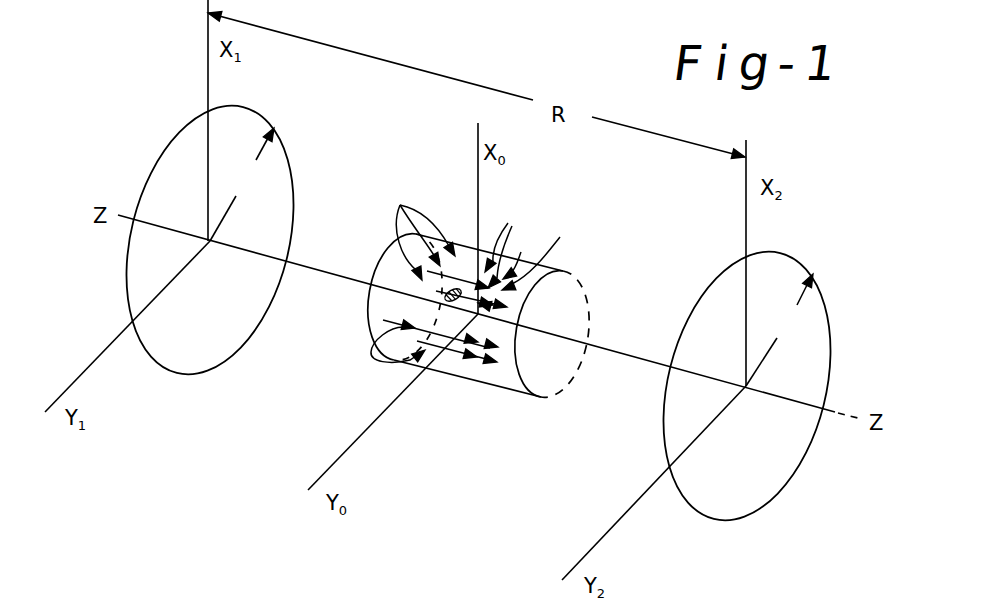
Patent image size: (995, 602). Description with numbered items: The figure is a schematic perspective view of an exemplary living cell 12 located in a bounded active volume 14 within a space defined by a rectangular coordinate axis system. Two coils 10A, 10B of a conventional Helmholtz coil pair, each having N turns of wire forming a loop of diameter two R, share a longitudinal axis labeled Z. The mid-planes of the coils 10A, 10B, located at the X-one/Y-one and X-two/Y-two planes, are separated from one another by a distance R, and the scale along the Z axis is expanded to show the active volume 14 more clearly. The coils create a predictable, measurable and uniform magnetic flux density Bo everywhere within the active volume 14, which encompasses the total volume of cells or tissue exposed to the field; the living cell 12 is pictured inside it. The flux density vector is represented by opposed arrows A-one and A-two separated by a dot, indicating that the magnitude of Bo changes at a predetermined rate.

The coil 10A is at (288, 165).
The coil 10B is at (713, 285).
The living cell 12 is at (422, 299).
The active volume 14 is at (383, 243).